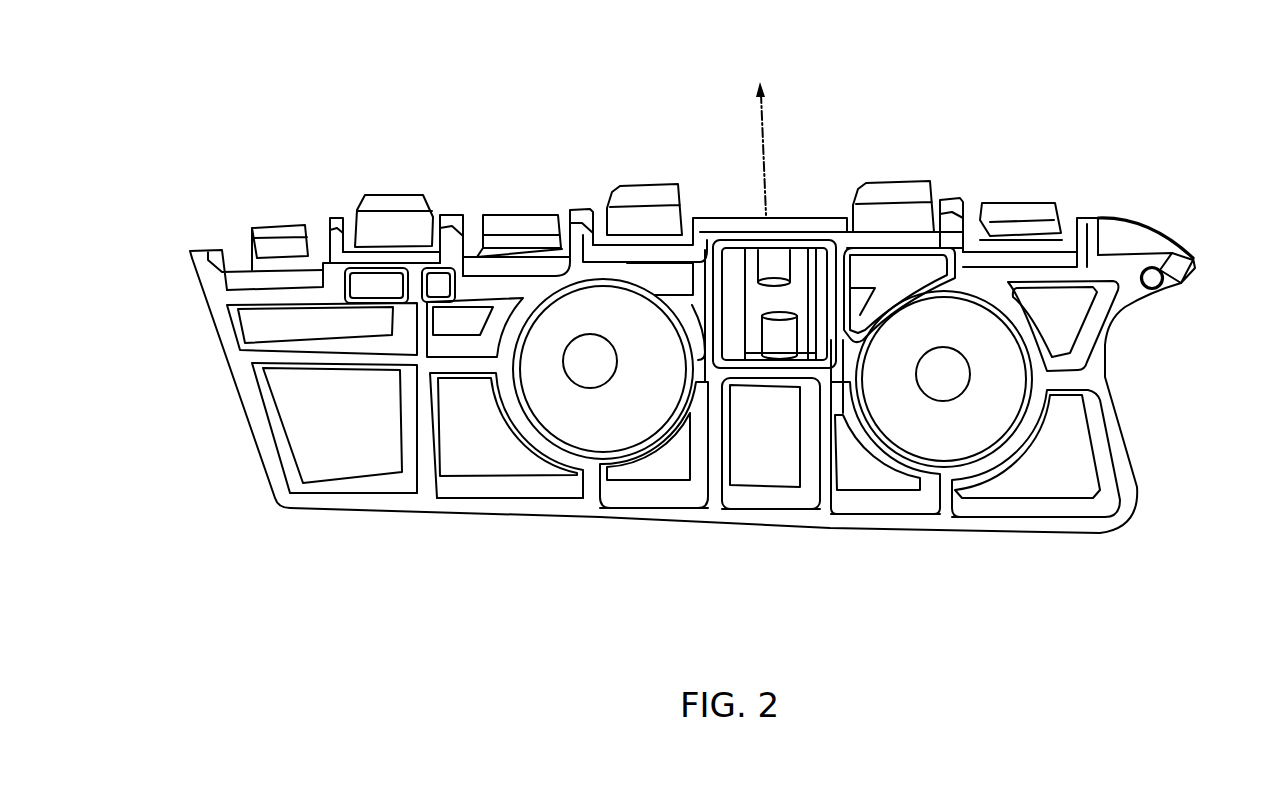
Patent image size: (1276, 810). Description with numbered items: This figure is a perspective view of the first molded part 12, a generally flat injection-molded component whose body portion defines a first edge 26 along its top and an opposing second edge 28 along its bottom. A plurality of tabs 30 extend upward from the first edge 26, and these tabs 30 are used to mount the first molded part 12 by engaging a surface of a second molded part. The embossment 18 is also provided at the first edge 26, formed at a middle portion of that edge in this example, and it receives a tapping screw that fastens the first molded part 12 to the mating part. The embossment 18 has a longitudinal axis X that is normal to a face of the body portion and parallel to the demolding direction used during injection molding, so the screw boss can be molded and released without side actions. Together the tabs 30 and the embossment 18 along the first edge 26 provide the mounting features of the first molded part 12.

The first molded part 12 is at (1196, 74).
The embossment 18 is at (766, 266).
The first edge 26 is at (194, 238).
The second edge 28 is at (300, 520).
The plurality of tabs 30 is at (400, 207).